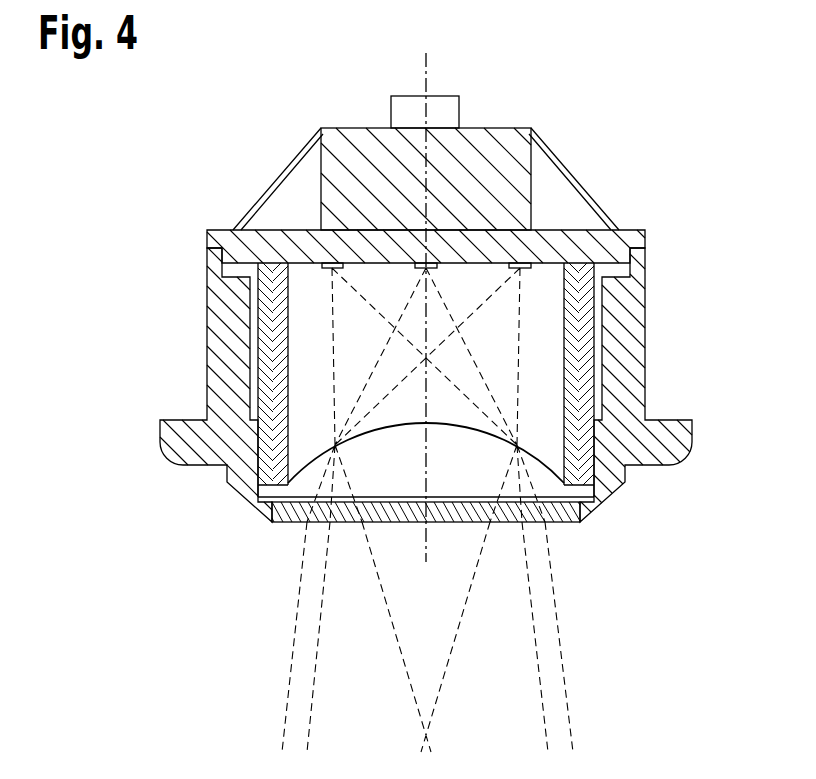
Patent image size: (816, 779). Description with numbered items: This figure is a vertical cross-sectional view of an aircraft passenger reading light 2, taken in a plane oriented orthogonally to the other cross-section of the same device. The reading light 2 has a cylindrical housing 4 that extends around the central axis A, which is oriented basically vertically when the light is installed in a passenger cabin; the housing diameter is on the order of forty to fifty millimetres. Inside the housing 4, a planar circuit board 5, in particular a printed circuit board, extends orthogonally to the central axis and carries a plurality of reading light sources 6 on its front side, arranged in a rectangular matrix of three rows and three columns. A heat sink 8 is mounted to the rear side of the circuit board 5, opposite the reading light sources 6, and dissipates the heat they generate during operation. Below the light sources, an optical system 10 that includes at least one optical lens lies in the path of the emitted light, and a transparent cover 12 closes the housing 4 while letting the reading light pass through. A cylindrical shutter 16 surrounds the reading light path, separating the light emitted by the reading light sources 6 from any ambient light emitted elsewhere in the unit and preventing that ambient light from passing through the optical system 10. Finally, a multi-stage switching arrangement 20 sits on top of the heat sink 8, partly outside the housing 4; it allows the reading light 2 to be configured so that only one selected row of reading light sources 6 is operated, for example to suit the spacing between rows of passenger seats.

The aircraft passenger reading light 2 is at (440, 402).
The cylindrical housing 4 is at (620, 342).
The circuit board 5 is at (630, 268).
The reading light sources 6 is at (322, 268).
The heat sink 8 is at (508, 173).
The optical system 10 is at (460, 468).
The transparent cover 12 is at (584, 519).
The cylindrical shutter 16 is at (577, 390).
The multi-stage switching arrangement 20 is at (448, 110).